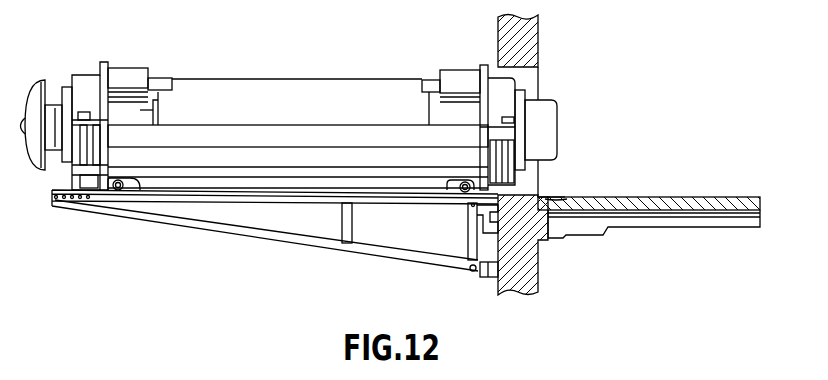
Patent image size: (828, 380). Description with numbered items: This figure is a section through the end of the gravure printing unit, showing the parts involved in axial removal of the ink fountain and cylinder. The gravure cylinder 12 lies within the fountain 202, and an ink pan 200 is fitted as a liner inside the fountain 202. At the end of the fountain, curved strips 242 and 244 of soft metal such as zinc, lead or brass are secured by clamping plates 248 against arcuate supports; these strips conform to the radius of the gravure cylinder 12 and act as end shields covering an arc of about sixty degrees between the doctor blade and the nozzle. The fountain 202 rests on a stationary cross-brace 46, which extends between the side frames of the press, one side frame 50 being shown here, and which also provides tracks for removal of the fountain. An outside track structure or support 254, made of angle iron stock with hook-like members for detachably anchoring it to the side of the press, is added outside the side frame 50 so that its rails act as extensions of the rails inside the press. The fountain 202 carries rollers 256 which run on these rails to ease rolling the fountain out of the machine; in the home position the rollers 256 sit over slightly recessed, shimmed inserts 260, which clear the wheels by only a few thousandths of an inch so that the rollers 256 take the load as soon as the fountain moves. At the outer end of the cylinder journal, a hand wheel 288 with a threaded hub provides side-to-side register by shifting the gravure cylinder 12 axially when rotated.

The gravure cylinder 12 is at (366, 70).
The cross-brace 46 is at (654, 200).
The side frame 50 is at (538, 36).
The ink pan 200 is at (262, 132).
The fountain 202 is at (356, 155).
The curved strip 242 is at (163, 78).
The curved strip 244 is at (427, 79).
The clamping plate 248 is at (127, 70).
The outside track structure 254 is at (262, 249).
The roller 256 is at (127, 183).
The insert 260 is at (565, 197).
The hand wheel 288 is at (36, 80).